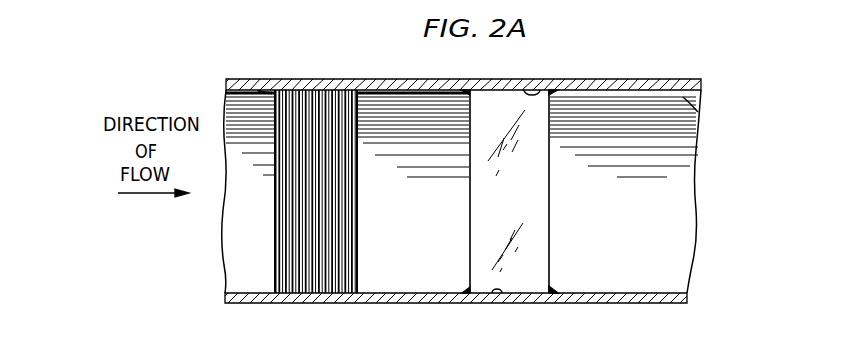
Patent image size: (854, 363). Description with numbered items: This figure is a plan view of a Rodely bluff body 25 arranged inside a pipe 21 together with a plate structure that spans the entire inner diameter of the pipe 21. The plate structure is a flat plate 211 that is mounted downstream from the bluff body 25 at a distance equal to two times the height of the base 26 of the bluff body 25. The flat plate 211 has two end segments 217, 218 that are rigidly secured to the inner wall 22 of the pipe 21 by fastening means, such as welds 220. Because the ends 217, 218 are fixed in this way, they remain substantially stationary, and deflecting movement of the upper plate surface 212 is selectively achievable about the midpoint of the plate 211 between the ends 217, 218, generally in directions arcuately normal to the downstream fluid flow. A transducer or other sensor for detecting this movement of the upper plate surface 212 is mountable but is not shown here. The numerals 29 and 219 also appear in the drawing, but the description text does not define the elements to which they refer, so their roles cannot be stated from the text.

The pipe 21 is at (461, 172).
The inner wall 22 is at (380, 79).
The bluff body 25 is at (296, 167).
The base 26 is at (275, 233).
The retaining shoulder 29 is at (259, 90).
The flat plate 211 is at (536, 191).
The upper plate surface 212 is at (535, 193).
The end segment 217 is at (540, 90).
The end segment 218 is at (494, 296).
The conduit lining 219 is at (680, 97).
The welds 220 is at (553, 290).